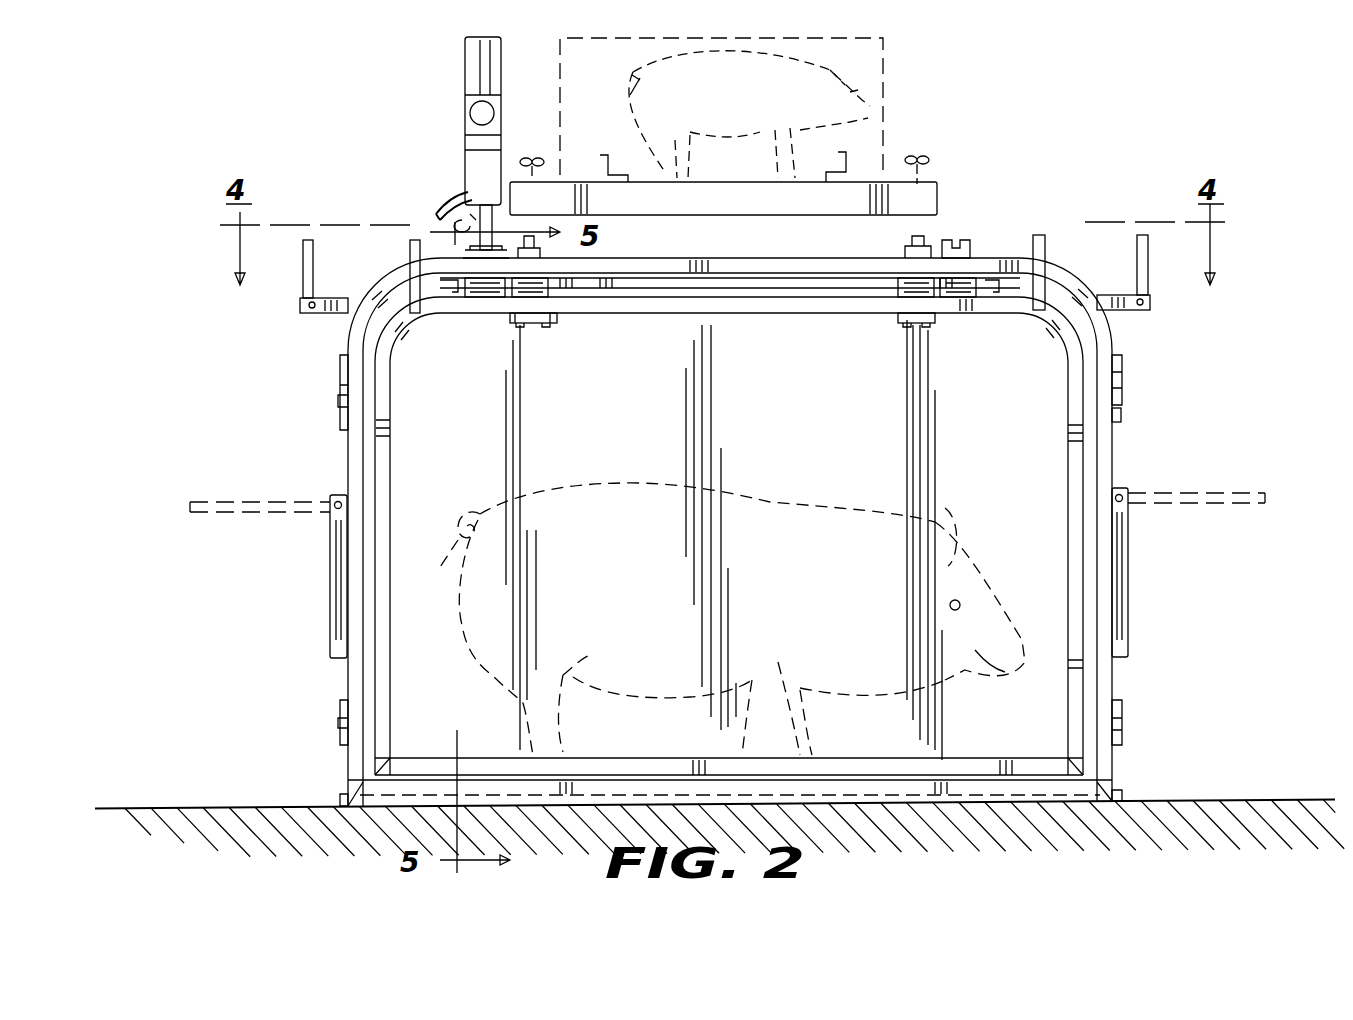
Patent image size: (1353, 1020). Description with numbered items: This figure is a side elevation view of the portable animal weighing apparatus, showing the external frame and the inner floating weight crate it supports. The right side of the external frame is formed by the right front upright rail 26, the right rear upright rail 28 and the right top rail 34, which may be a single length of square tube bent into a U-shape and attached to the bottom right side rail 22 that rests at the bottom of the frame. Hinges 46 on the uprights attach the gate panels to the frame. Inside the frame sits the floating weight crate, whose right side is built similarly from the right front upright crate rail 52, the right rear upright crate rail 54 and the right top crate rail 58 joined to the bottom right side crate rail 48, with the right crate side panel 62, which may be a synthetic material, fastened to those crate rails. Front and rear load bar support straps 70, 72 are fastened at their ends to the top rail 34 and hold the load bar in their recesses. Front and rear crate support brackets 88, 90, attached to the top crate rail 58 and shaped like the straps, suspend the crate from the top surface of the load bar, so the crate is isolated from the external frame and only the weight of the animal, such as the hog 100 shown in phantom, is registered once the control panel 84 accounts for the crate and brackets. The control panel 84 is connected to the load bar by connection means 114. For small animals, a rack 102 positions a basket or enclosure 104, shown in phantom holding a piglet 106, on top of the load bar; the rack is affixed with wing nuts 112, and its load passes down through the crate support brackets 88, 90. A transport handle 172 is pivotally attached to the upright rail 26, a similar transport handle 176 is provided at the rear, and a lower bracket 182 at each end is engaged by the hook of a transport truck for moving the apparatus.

The bottom right side rail 22 is at (1130, 801).
The right front upright rail 26 is at (348, 467).
The right rear upright rail 28 is at (1103, 455).
The right top rail 34 is at (732, 258).
The hinges 46 is at (340, 360).
The bottom right side crate rail 48 is at (948, 758).
The right front upright crate rail 52 is at (390, 395).
The right rear upright crate rail 54 is at (1068, 410).
The right top crate rail 58 is at (832, 305).
The right crate side panel 62 is at (822, 436).
The front load bar support strap 70 is at (460, 322).
The rear load bar support strap 72 is at (958, 245).
The control panel 84 is at (462, 60).
The front crate support bracket 88 is at (537, 323).
The rear crate support bracket 90 is at (905, 250).
The hog 100 is at (632, 476).
The rack 102 is at (948, 192).
The basket or enclosure 104 is at (905, 55).
The piglet 106 is at (632, 80).
The wing nuts 112 is at (536, 152).
The connection means 114 is at (440, 195).
The right transport handle 172 is at (235, 514).
The transport handle 176 is at (1255, 506).
The lower bracket 182 is at (340, 798).